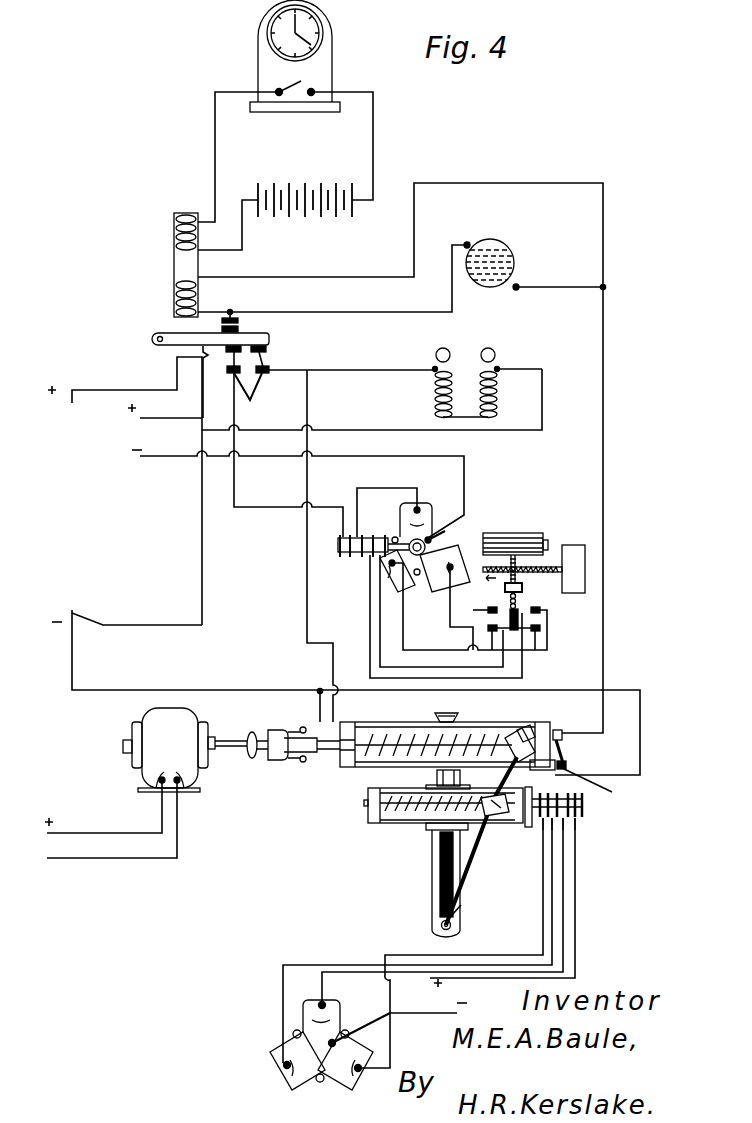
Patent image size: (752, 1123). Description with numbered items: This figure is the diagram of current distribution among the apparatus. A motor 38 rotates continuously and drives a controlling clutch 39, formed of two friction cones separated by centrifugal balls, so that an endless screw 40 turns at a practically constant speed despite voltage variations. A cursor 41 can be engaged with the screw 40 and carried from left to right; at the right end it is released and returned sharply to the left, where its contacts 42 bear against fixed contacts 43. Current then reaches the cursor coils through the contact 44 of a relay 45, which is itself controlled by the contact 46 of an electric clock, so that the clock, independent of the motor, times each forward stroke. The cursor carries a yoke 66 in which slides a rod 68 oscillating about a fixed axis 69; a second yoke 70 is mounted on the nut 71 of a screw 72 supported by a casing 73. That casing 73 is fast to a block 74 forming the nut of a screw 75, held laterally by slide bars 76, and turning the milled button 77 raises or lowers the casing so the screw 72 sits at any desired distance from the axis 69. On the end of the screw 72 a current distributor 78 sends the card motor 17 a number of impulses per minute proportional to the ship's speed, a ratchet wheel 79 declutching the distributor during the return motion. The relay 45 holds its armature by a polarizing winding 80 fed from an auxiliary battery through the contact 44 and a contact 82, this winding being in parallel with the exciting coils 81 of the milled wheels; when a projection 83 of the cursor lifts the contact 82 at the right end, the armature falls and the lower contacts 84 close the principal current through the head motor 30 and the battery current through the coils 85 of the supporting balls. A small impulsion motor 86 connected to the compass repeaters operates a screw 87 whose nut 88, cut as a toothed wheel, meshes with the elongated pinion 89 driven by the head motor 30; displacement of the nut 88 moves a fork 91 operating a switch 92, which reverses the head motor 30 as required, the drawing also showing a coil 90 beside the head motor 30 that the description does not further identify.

The card motor 17 is at (330, 1045).
The head motor 30 is at (425, 535).
The motor 38 is at (185, 750).
The controlling clutch 39 is at (300, 762).
The endless screw 40 is at (382, 752).
The cursor 41 is at (525, 733).
The contacts carried by the cursor 42 is at (515, 738).
The contacts carried by the fixed part 43 is at (352, 730).
The contact of the relay 44 is at (212, 364).
The relay 45 is at (167, 265).
The contact of an electric clock 46 is at (295, 56).
The ring or yoke 66 is at (553, 732).
The rod 68 is at (468, 875).
The axis 69 is at (442, 924).
The second yoke 70 is at (493, 812).
The nut 71 is at (499, 818).
The screw 72 is at (403, 807).
The casing 73 is at (368, 822).
The block 74 is at (428, 828).
The screw 75 is at (458, 912).
The slide bars 76 is at (435, 880).
The milled button 77 is at (456, 715).
The current distributor 78 is at (584, 807).
The ratchet wheel 79 is at (541, 825).
The polarizing winding 80 is at (204, 298).
The exciting coils 81 is at (491, 275).
The contact 82 is at (612, 792).
The projection 83 is at (562, 762).
The lower contacts 84 is at (252, 380).
The coils of the supporting balls 85 is at (466, 383).
The impulsion motor 86 is at (575, 558).
The screw 87 is at (548, 566).
The nut 88 is at (519, 577).
The elongated pinion 89 is at (507, 533).
The solenoid 90 is at (345, 563).
The fork 91 is at (524, 589).
The switch 92 is at (518, 633).